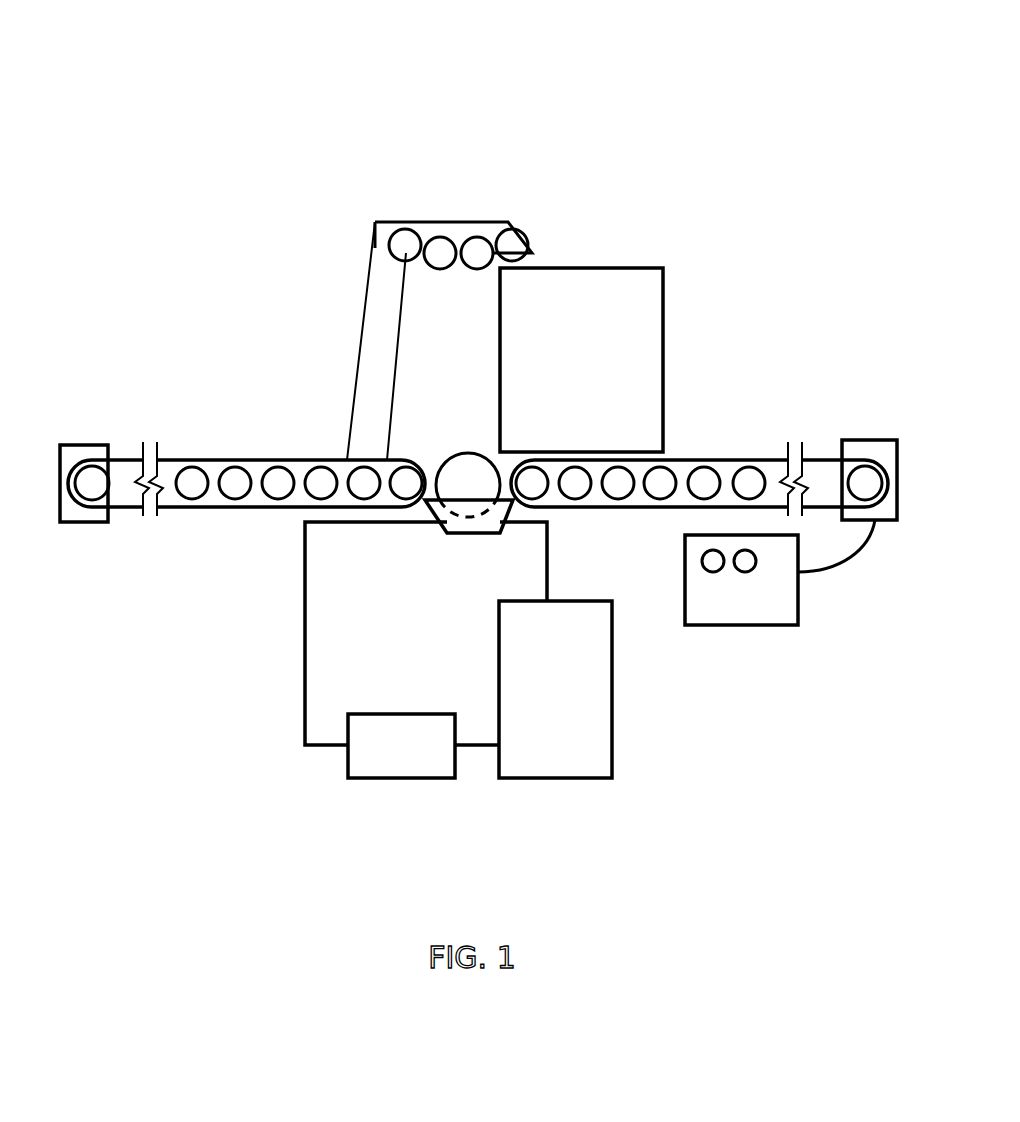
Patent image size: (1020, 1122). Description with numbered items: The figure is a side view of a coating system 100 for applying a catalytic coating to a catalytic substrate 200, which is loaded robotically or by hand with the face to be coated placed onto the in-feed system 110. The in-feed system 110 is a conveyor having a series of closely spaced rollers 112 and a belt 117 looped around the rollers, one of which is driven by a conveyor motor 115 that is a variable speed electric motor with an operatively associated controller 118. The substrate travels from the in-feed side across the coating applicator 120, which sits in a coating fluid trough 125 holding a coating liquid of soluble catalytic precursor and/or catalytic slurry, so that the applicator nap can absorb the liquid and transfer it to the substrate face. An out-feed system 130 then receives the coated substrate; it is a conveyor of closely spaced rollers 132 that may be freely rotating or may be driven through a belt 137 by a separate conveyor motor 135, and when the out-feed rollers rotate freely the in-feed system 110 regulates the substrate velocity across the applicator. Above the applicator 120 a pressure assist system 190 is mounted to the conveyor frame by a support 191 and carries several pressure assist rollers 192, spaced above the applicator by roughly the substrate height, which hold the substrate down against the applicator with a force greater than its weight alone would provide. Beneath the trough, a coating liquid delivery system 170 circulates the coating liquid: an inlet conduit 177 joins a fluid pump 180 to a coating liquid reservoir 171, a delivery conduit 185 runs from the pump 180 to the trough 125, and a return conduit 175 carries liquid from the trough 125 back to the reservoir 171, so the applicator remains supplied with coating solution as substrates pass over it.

The coating system 100 is at (352, 207).
The in-feed system 110 is at (742, 438).
The rollers 112 is at (704, 483).
The conveyor motor 115 is at (860, 450).
The belt 117 is at (831, 458).
The controller 118 is at (722, 607).
The coating applicator 120 is at (468, 453).
The coating fluid trough 125 is at (450, 523).
The out-feed system 130 is at (237, 433).
The rollers 132 is at (190, 486).
The separate conveyor motor 135 is at (70, 452).
The belt 137 is at (283, 460).
The coating liquid delivery system 170 is at (268, 747).
The coating liquid reservoir 171 is at (583, 755).
The return conduit 175 is at (547, 540).
The inlet conduit 177 is at (462, 750).
The fluid pump 180 is at (392, 765).
The delivery conduit 185 is at (305, 623).
The pressure assist system 190 is at (517, 180).
The support 191 is at (375, 222).
The pressure assist rollers 192 is at (512, 245).
The catalytic substrate 200 is at (621, 297).